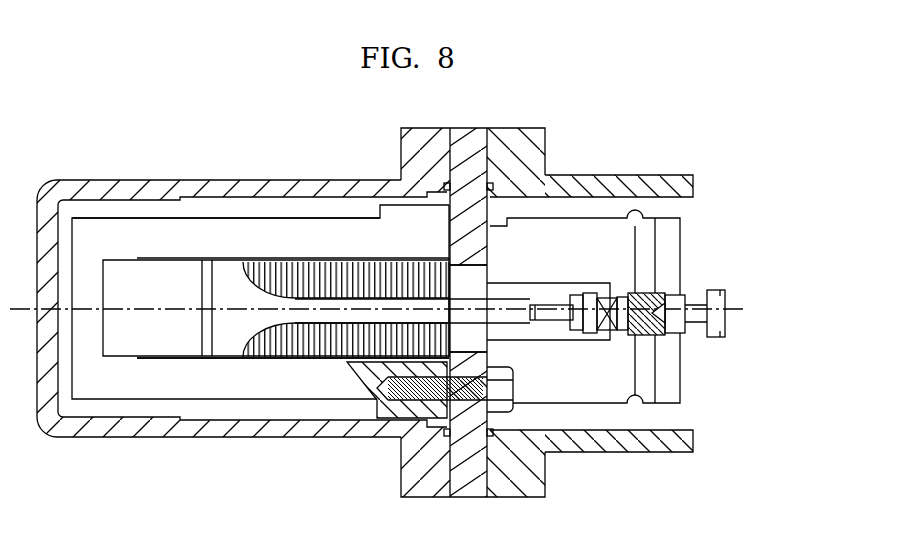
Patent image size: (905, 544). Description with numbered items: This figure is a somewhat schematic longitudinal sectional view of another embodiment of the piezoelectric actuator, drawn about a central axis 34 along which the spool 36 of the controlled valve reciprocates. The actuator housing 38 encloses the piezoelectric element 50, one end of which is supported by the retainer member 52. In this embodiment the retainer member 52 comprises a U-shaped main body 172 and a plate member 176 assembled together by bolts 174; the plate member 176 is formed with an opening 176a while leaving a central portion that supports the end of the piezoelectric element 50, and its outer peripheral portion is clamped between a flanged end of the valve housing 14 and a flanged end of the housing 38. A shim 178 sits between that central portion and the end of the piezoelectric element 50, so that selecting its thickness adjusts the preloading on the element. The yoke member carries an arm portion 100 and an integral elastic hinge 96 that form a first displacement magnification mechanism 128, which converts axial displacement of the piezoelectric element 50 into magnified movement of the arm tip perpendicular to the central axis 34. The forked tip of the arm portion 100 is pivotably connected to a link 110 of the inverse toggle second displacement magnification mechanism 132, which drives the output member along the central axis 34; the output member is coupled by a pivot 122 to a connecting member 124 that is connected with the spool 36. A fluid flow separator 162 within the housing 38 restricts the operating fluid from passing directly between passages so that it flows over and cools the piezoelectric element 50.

The valve housing 14 is at (673, 450).
The central axis 34 is at (172, 305).
The spool 36 is at (710, 292).
The housing 38 is at (304, 434).
The piezoelectric element 50 is at (358, 277).
The retainer member 52 is at (300, 236).
The integral elastic hinge 96 is at (210, 266).
The arm portion 100 is at (340, 316).
The link 110 is at (553, 310).
The pivot 122 is at (623, 300).
The connecting member 124 is at (658, 336).
The first displacement magnification mechanism 128 is at (222, 366).
The second displacement magnification mechanism 132 is at (588, 283).
The fluid flow separator 162 is at (589, 408).
The U-shaped main body 172 is at (160, 228).
The bolt 174 is at (503, 390).
The plate member 176 is at (472, 140).
The opening 176a is at (478, 277).
The shim 178 is at (443, 282).